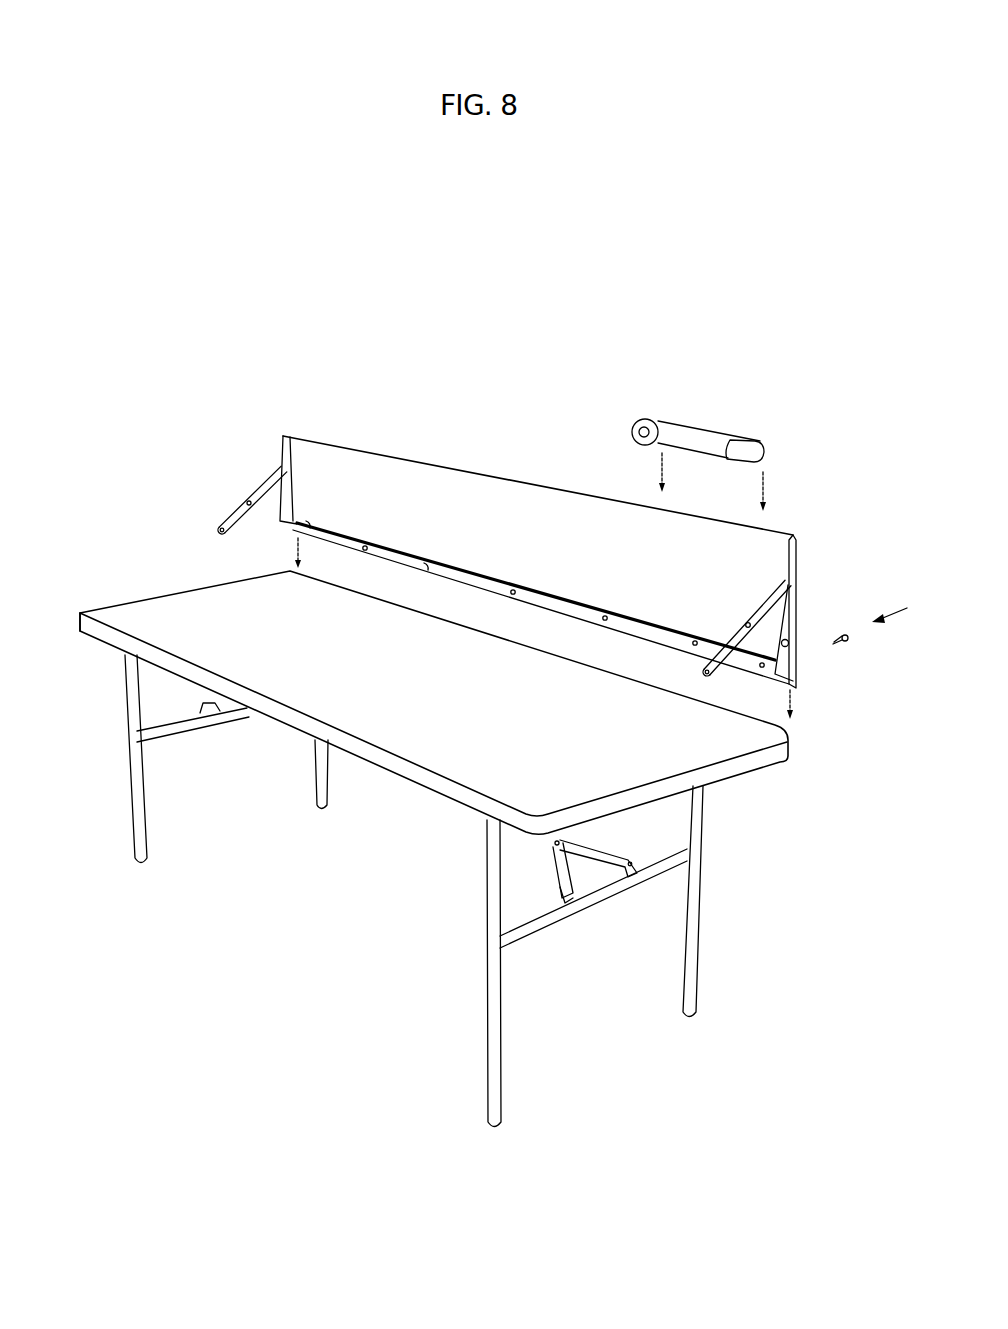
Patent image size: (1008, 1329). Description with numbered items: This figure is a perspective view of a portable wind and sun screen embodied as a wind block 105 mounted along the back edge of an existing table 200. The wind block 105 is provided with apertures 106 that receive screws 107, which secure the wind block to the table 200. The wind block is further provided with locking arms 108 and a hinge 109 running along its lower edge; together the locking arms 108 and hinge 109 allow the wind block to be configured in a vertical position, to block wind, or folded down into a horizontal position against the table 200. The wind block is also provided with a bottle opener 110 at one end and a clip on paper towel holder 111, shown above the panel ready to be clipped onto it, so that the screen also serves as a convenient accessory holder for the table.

The table 200 is at (175, 628).
The wind block 105 is at (493, 470).
The apertures 106 is at (428, 568).
The screws 107 is at (848, 641).
The locking arms 108 is at (246, 500).
The hinge 109 is at (471, 567).
The bottle opener 110 is at (794, 636).
The clip on paper towel holder 111 is at (748, 448).